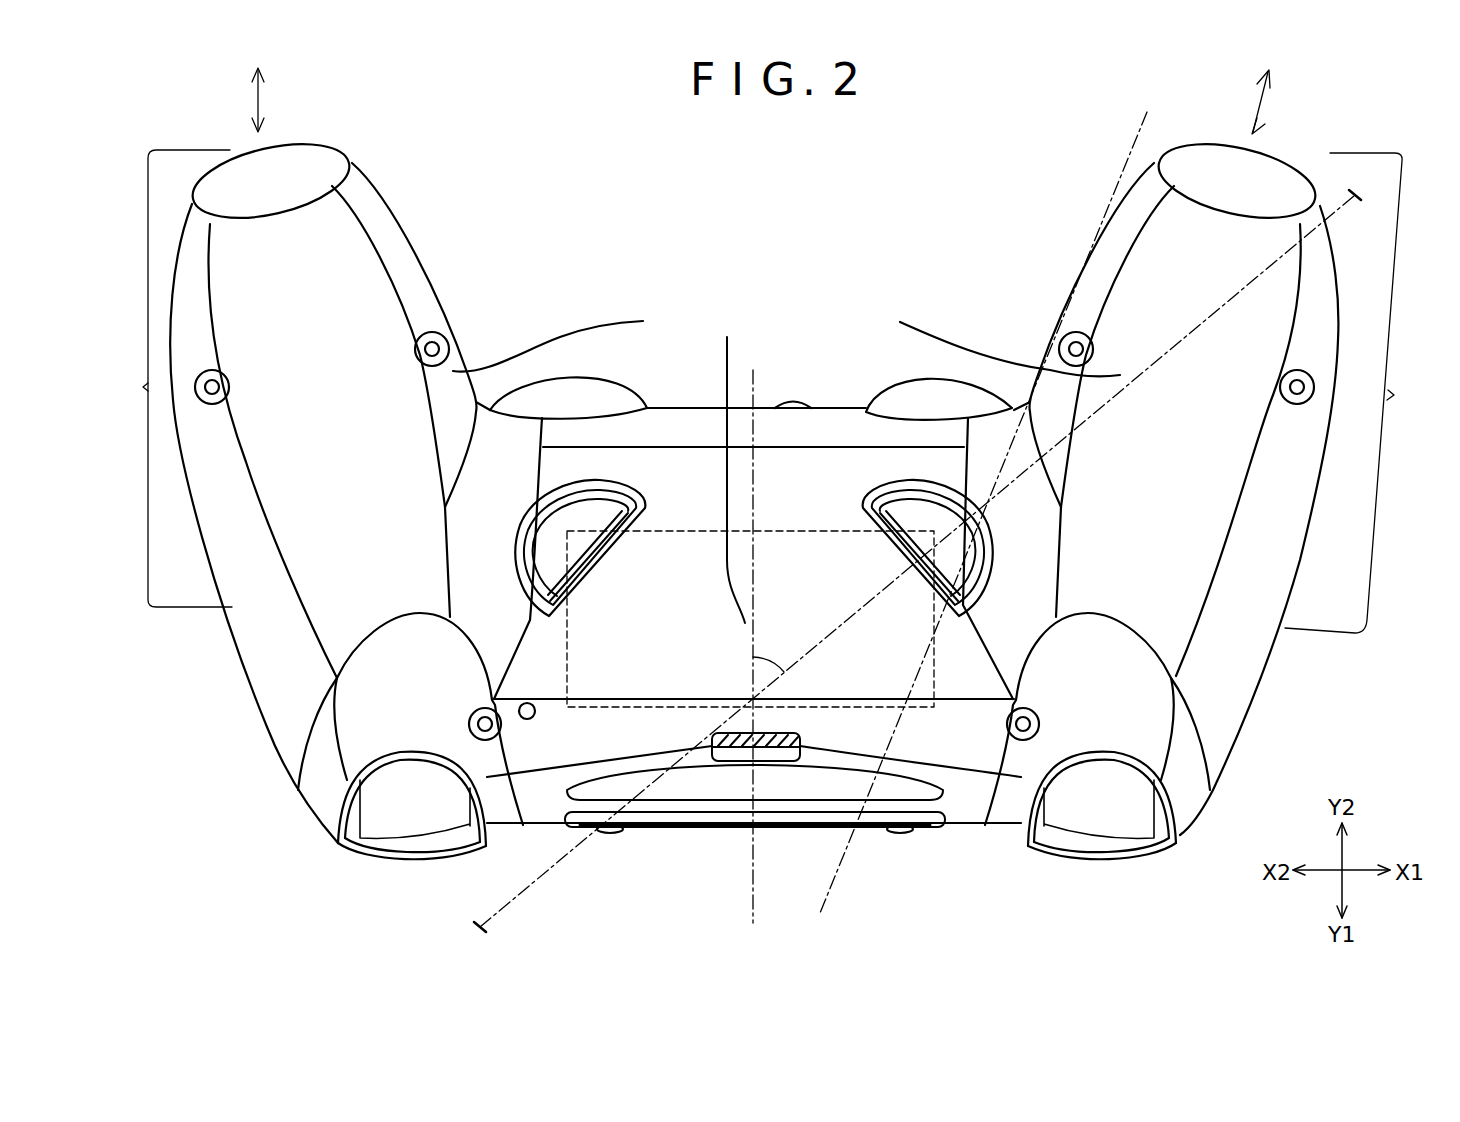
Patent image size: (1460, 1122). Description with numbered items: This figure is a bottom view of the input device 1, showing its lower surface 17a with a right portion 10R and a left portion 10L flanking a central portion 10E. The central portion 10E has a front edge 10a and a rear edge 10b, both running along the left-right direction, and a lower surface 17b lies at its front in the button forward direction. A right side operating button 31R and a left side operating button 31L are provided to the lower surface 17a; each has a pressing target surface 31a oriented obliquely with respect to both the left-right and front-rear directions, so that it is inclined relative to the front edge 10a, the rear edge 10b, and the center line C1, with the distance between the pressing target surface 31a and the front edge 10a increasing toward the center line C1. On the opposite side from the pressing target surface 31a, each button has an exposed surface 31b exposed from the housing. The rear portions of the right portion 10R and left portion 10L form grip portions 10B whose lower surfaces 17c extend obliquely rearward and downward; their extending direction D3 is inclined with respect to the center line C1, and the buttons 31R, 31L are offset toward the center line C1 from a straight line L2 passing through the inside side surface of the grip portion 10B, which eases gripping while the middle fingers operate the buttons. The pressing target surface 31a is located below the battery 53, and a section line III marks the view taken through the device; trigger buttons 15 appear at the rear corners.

The input device 1 is at (1022, 182).
The left portion 10L is at (212, 637).
The right portion 10R is at (1268, 707).
The grip portion 10B is at (771, 391).
The front edge 10a is at (729, 829).
The rear edge 10b is at (807, 401).
The central portion 10E is at (920, 845).
The trigger button 15 is at (368, 849).
The lower surface 17a is at (883, 300).
The lower surface of central portion 17b is at (738, 465).
The lower surface of grip portion 17c is at (643, 321).
The left side operating button 31L is at (623, 478).
The right side operating button 31R is at (896, 478).
The pressing target surface 31a is at (582, 572).
The exposed surface 31b is at (533, 572).
The battery 53 is at (623, 708).
The center line C1 is at (758, 631).
The straight line L2 is at (986, 513).
The section line III is at (478, 918).
The extending direction of grip portion D3 is at (761, 101).